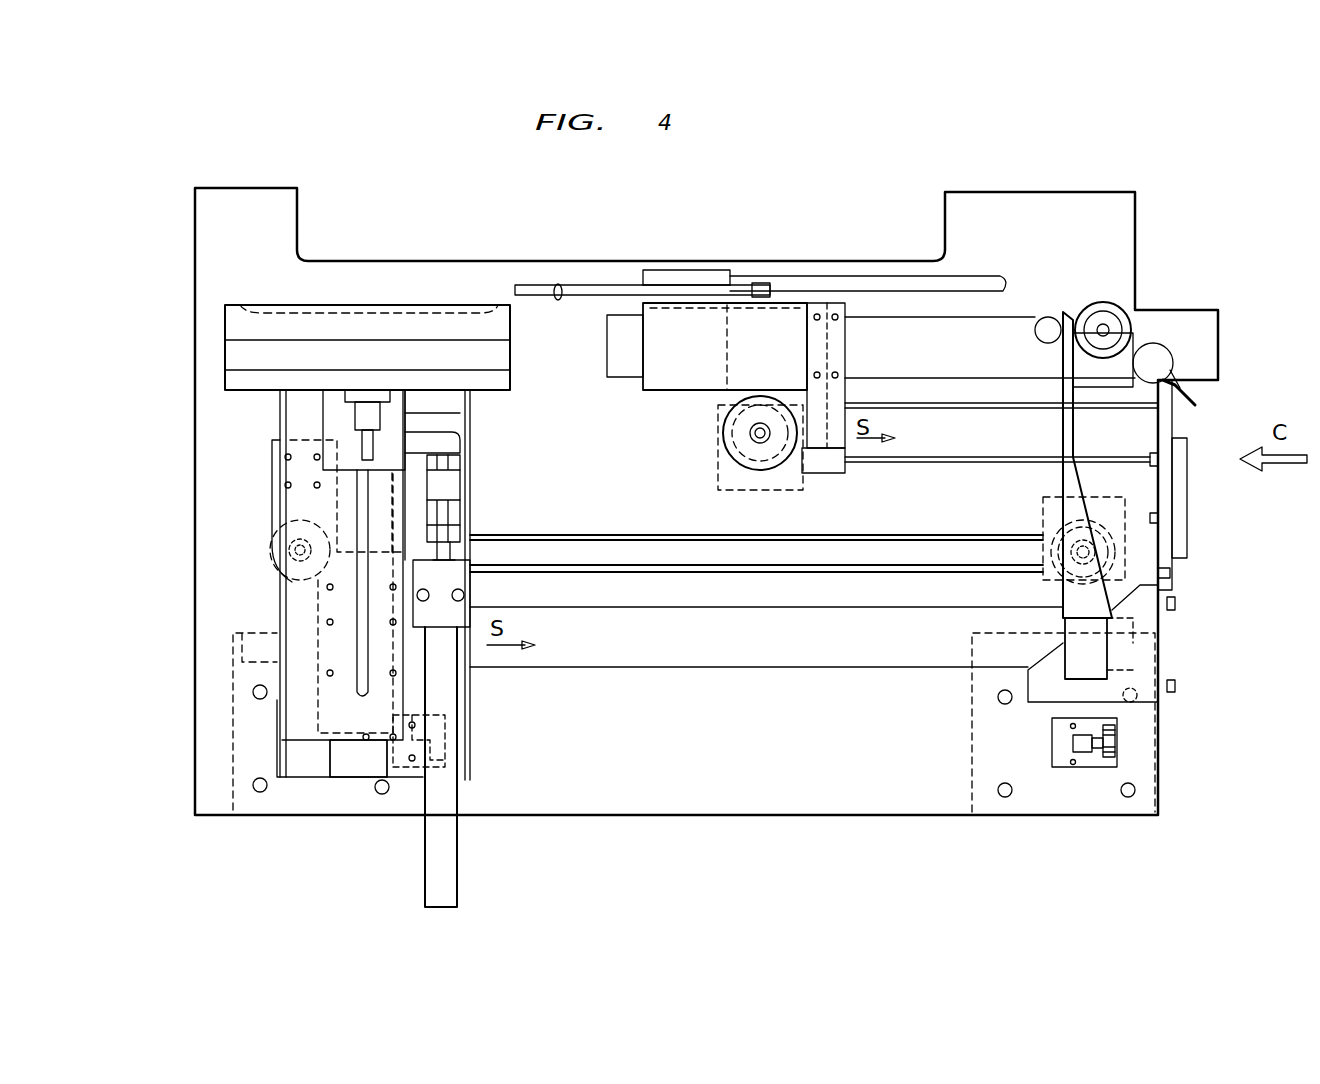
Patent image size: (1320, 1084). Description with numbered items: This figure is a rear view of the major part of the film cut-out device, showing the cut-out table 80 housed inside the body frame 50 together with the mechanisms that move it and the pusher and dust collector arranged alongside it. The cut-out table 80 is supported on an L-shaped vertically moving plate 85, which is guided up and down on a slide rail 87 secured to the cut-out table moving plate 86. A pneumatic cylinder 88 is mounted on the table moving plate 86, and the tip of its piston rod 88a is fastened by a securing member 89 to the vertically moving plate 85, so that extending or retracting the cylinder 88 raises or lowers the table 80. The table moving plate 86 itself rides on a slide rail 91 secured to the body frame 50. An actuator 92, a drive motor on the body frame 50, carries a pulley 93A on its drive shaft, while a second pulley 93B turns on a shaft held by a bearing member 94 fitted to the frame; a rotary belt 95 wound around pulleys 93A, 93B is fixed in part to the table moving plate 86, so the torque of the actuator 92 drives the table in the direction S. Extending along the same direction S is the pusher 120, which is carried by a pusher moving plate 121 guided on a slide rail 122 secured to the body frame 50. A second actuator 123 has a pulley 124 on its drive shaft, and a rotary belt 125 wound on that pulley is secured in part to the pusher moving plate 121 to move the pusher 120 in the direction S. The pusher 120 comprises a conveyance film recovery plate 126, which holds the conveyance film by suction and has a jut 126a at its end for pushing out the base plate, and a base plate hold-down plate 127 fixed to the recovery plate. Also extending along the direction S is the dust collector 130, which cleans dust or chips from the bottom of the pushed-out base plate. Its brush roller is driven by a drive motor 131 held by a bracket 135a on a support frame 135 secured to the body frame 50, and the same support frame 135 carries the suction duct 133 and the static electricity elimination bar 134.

The body frame 50 is at (1015, 195).
The cut-out table 80 is at (406, 304).
The vertically moving plate 85 is at (290, 722).
The cut-out table moving plate 86 is at (440, 740).
The slide rail 87 is at (358, 782).
The pneumatic cylinder 88 is at (452, 878).
The piston rod 88a is at (455, 490).
The securing member 89 is at (450, 440).
The slide rail 91 is at (790, 655).
The actuator 92 is at (1045, 510).
The pulley 93A is at (1050, 578).
The pulley 93B is at (290, 586).
The bearing member 94 is at (278, 478).
The rotary belt 95 is at (592, 534).
The pusher 120 is at (700, 268).
The pusher moving plate 121 is at (660, 390).
The slide rail 122 is at (615, 348).
The actuator 123 is at (722, 455).
The pulley 124 is at (745, 480).
The rotary belt 125 is at (942, 458).
The conveyance film recovery plate 126 is at (598, 285).
The jut 126a is at (762, 283).
The base plate hold-down plate 127 is at (820, 278).
The dust collector 130 is at (1138, 340).
The drive motor 131 is at (1103, 302).
The suction duct 133 is at (1092, 648).
The static electricity elimination bar 134 is at (1160, 355).
The support frame 135 is at (1168, 420).
The bracket 135a is at (1062, 352).